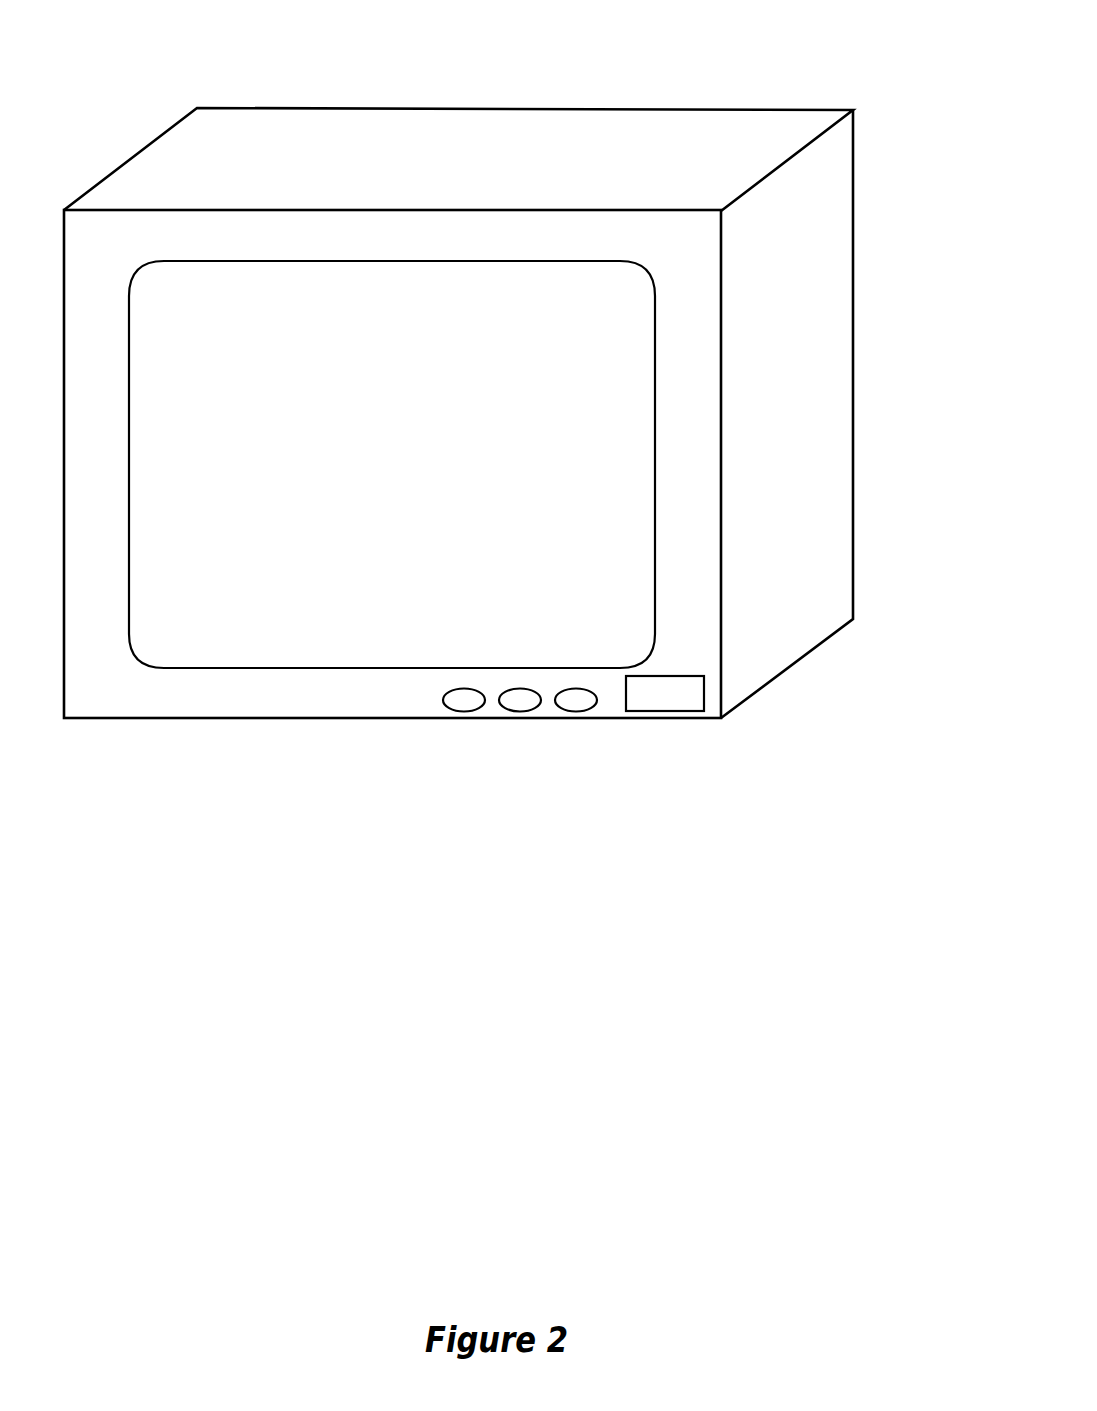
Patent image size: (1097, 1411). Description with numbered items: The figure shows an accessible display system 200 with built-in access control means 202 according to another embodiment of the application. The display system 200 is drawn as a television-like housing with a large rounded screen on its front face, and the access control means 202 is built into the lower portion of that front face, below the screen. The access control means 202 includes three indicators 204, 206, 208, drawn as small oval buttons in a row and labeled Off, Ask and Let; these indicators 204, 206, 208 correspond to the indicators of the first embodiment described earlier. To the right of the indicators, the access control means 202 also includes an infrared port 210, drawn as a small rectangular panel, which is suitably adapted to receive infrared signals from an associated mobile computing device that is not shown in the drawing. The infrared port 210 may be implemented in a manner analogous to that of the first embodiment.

The accessible display system 200 is at (502, 416).
The access control means 202 is at (129, 719).
The indicator 204 is at (450, 710).
The indicator 206 is at (507, 710).
The indicator 208 is at (564, 710).
The infrared port 210 is at (677, 711).